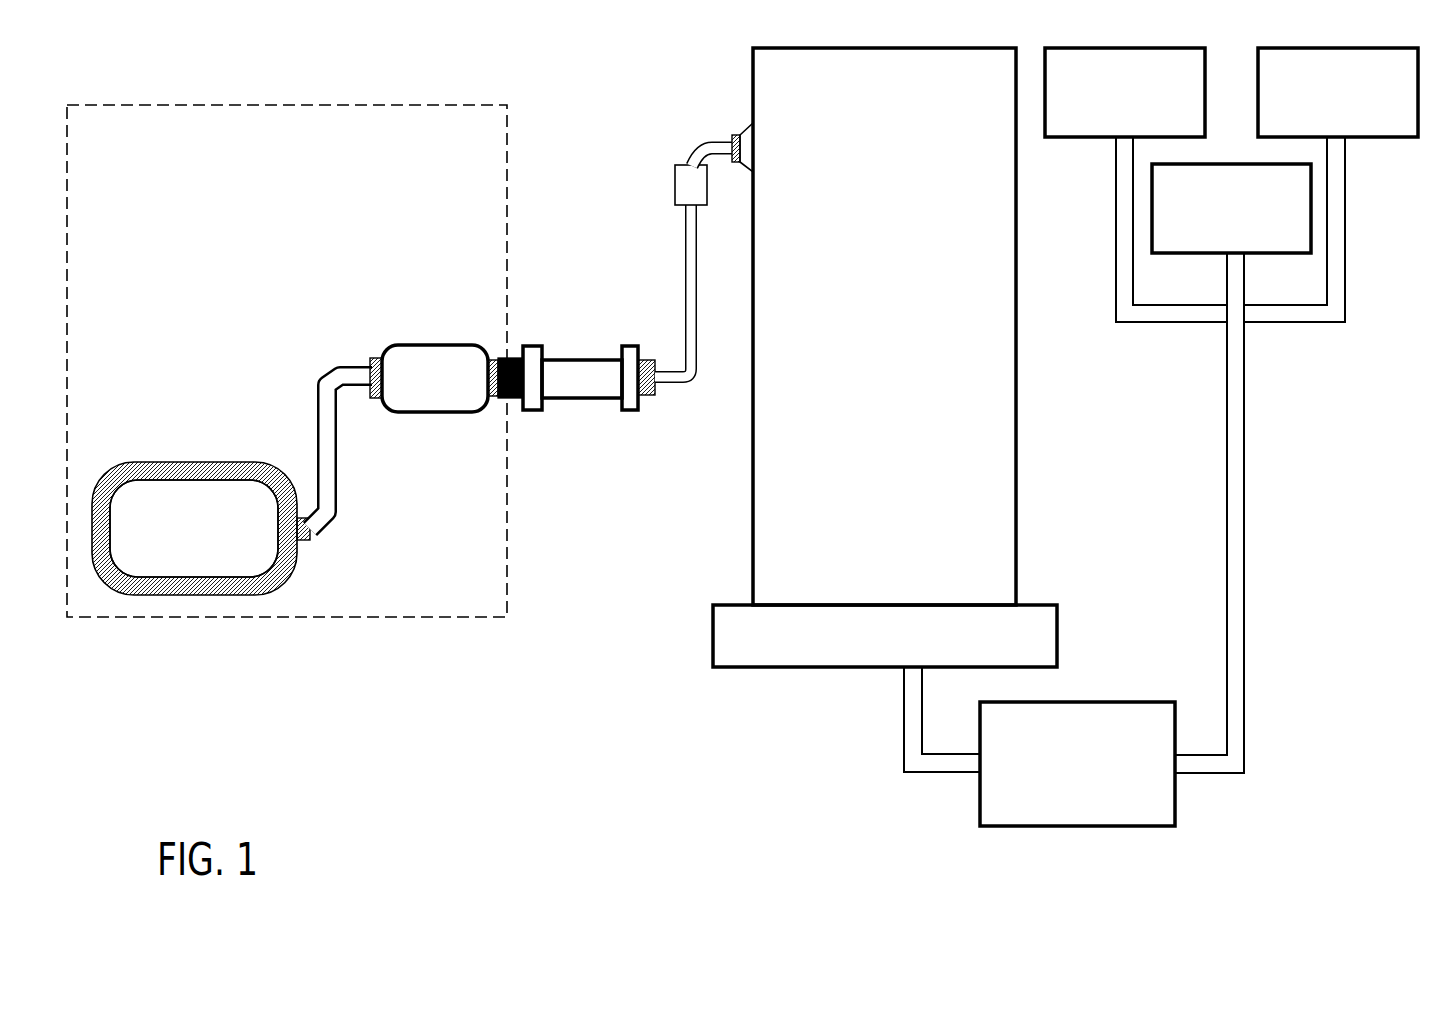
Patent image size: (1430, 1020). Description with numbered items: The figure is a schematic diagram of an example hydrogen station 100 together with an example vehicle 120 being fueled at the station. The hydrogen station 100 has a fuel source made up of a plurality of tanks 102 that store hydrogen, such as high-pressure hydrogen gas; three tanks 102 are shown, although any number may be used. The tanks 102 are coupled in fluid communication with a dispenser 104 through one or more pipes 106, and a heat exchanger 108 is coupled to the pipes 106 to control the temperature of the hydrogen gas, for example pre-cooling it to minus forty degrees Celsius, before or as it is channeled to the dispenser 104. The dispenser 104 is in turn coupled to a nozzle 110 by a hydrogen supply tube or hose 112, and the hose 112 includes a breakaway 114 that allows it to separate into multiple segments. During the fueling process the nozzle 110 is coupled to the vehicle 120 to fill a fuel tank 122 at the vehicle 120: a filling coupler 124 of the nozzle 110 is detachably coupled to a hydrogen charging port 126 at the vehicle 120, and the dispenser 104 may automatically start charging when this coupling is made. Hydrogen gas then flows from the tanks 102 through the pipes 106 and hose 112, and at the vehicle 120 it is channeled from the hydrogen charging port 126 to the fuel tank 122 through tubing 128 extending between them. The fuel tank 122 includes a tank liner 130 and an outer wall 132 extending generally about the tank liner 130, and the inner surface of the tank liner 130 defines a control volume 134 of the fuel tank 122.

The hydrogen station 100 is at (1300, 748).
The tanks 102 is at (1356, 124).
The dispenser 104 is at (866, 367).
The pipes 106 is at (1244, 540).
The heat exchanger 108 is at (1058, 811).
The nozzle 110 is at (596, 420).
The hose 112 is at (665, 388).
The breakaway 114 is at (683, 165).
The vehicle 120 is at (205, 139).
The fuel tank 122 is at (194, 503).
The filling coupler 124 is at (535, 412).
The hydrogen charging port 126 is at (490, 400).
The tubing 128 is at (330, 522).
The tank liner 130 is at (147, 476).
The outer wall 132 is at (190, 462).
The control volume 134 is at (211, 544).